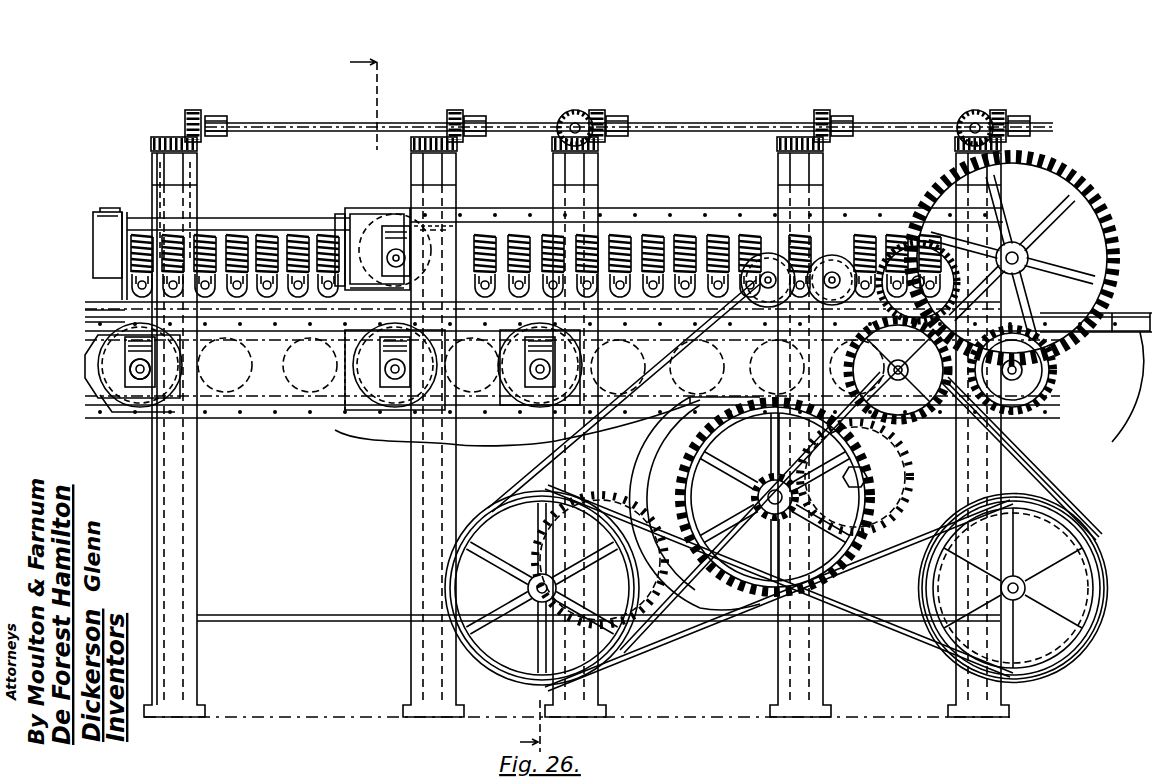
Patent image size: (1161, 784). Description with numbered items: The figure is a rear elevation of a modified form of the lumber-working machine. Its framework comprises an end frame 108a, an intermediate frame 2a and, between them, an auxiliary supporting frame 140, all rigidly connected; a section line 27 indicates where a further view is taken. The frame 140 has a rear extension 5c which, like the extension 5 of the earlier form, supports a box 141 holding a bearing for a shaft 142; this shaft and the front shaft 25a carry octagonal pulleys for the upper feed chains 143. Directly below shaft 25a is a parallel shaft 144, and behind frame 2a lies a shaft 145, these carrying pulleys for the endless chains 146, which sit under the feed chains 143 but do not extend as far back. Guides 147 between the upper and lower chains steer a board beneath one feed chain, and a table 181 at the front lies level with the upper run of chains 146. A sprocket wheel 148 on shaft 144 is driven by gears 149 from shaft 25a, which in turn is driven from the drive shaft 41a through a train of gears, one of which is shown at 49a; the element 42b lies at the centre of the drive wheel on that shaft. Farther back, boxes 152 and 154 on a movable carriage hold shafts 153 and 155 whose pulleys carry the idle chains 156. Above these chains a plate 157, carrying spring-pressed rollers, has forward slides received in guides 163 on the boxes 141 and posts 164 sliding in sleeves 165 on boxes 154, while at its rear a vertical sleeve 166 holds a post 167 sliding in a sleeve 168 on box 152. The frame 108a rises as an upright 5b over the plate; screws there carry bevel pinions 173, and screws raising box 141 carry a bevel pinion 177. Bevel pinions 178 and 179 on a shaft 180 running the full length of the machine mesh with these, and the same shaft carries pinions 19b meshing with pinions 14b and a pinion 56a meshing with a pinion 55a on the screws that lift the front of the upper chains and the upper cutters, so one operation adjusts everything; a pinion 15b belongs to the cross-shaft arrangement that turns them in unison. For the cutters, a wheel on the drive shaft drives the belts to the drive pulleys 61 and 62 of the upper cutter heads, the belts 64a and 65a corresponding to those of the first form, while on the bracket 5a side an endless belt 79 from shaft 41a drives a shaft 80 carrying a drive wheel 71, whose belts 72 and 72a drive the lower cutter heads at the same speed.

The intermediate frame 2a is at (560, 420).
The extension 5 is at (1000, 205).
The bracket 5a is at (835, 215).
The upright 5b is at (190, 212).
The extension 5c is at (440, 240).
The pinion 14b is at (552, 133).
The spur gear 15b is at (580, 112).
The pinion 19b is at (600, 115).
The shaft 25a is at (1035, 257).
The section line 27 is at (456, 403).
The drive shaft 41a is at (538, 610).
The wheel hub 42b is at (470, 700).
The large gear 49a is at (1060, 185).
The pinion 55a is at (796, 135).
The pinion 56a is at (830, 116).
The drive pulley 61 is at (835, 256).
The drive pulley 62 is at (766, 252).
The gear wheel 64a is at (700, 580).
The chain 65a is at (676, 600).
The drive wheel 71 is at (1080, 640).
The driving belt 72 is at (1050, 480).
The belt 72a is at (1080, 520).
The endless belt 79 is at (900, 642).
The shaft 80 is at (1028, 588).
The end frame 108a is at (172, 500).
The auxiliary supporting frame 140 is at (420, 612).
The box 141 is at (378, 208).
The shaft 142 is at (430, 236).
The upper feed chains 143 is at (672, 208).
The shaft 144 is at (1050, 390).
The shaft 145 is at (520, 400).
The endless chains 146 is at (965, 135).
The guides 147 is at (1130, 332).
The sprocket wheel 148 is at (1040, 372).
The gears 149 is at (905, 240).
The box 152 is at (112, 402).
The shaft 153 is at (140, 378).
The box 154 is at (370, 402).
The shaft 155 is at (398, 378).
The endless chains 156 is at (275, 340).
The plate 157 is at (262, 224).
The guide 163 is at (379, 283).
The posts 164 is at (355, 212).
The sleeves 165 is at (340, 405).
The vertical sleeve 166 is at (98, 258).
The post 167 is at (105, 292).
The sleeve 168 is at (108, 370).
The bevel pinion 173 is at (160, 138).
The bevel pinion 177 is at (430, 135).
The bevel pinion 178 is at (200, 115).
The bevel pinion 179 is at (465, 116).
The shaft 180 is at (668, 122).
The table 181 is at (1122, 399).